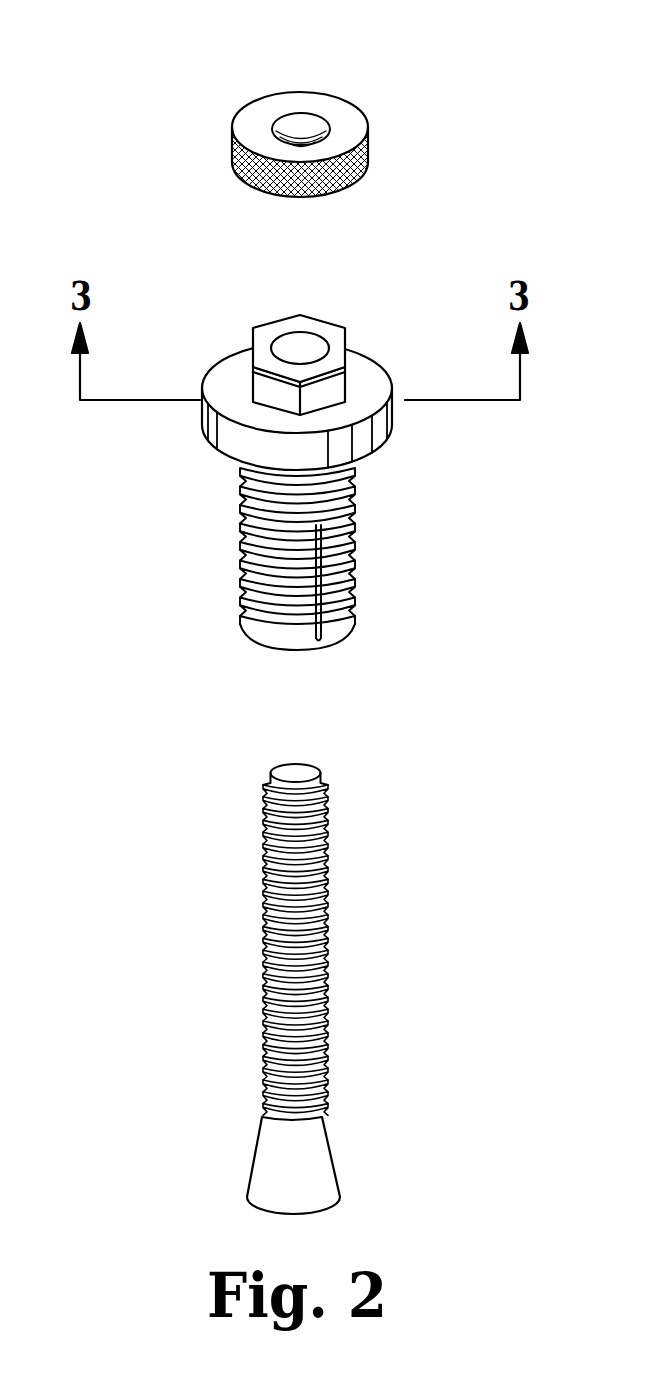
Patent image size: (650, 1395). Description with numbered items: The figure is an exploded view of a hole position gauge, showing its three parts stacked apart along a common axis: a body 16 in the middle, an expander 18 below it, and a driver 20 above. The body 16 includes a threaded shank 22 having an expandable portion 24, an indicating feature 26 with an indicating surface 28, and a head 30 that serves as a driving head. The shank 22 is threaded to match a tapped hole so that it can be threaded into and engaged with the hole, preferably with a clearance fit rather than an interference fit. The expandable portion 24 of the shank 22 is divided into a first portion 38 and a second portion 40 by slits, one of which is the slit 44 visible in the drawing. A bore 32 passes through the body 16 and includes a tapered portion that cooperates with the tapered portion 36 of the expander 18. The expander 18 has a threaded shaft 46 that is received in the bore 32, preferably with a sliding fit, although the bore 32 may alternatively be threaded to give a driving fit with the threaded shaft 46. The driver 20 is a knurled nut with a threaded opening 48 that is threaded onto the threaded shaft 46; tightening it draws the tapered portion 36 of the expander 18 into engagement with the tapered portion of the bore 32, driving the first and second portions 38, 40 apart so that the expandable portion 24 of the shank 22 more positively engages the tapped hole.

The body 16 is at (306, 484).
The expander 18 is at (269, 989).
The driver 20 is at (208, 101).
The shank 22 is at (359, 590).
The expandable portion 24 is at (348, 572).
The indicating feature 26 is at (373, 369).
The indicating surface 28 is at (242, 452).
The head 30 is at (265, 338).
The bore 32 is at (290, 343).
The tapered portion 36 is at (327, 1163).
The first portion 38 is at (260, 642).
The second portion 40 is at (348, 617).
The slit 44 is at (328, 640).
The threaded shaft 46 is at (318, 955).
The threaded opening 48 is at (307, 118).